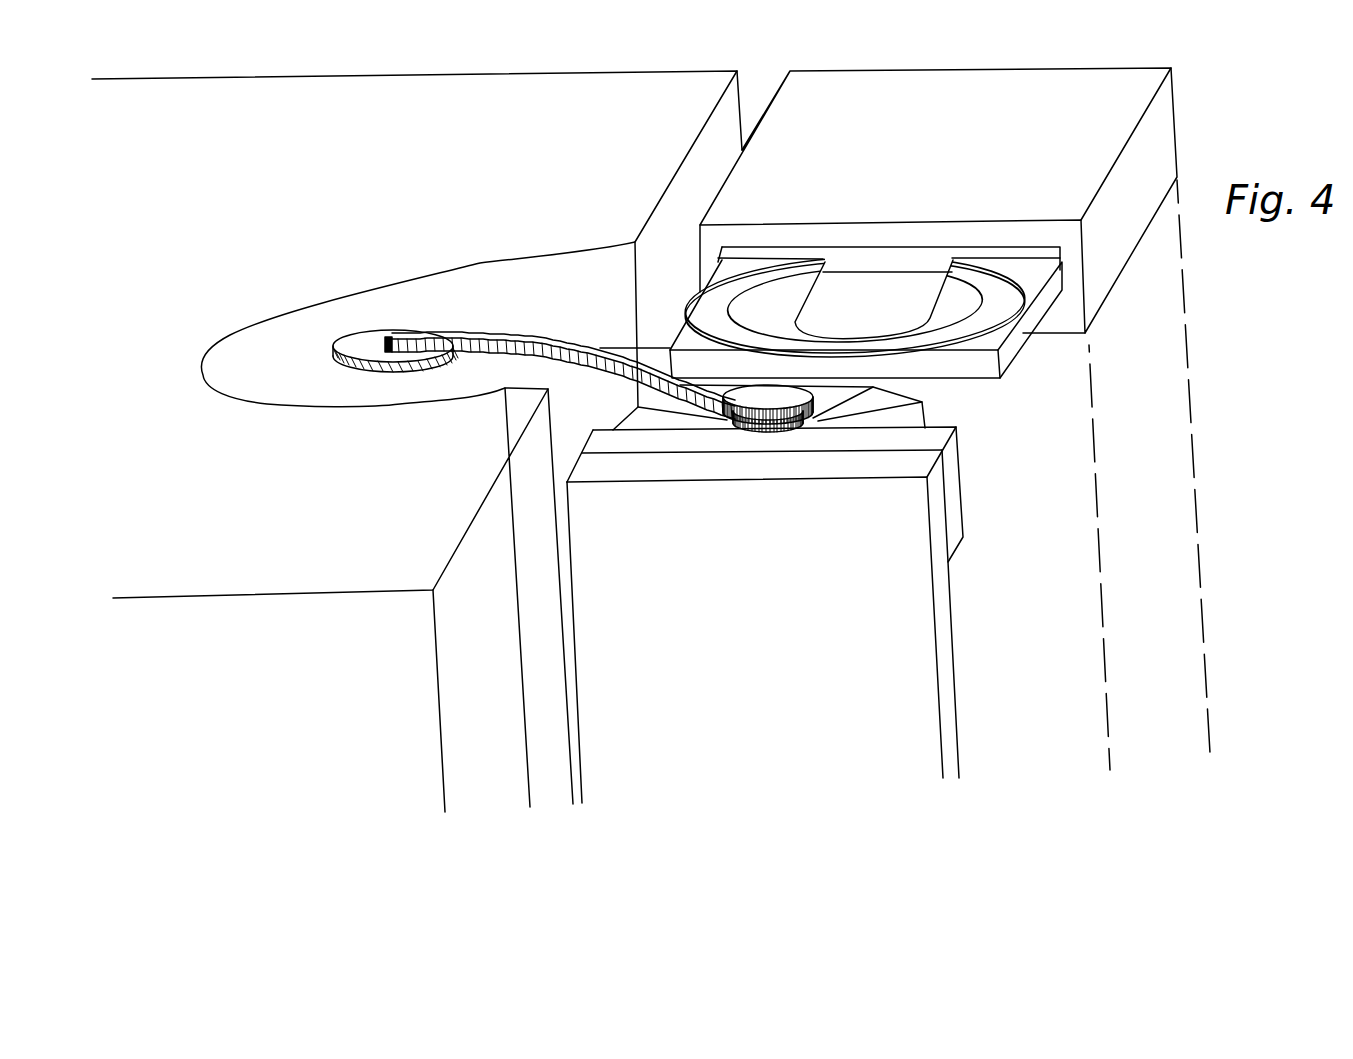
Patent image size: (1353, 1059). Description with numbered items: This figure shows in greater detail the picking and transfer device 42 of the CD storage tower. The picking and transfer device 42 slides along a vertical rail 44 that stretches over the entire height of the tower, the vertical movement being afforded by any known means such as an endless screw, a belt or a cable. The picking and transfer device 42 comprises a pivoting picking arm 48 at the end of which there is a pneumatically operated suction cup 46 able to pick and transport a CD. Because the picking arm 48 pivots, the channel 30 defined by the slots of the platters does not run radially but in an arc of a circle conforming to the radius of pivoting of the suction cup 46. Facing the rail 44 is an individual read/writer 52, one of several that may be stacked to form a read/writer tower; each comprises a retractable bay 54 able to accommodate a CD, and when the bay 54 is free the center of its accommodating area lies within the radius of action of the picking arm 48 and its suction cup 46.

The channel 30 is at (483, 268).
The picking and transfer device 42 is at (938, 405).
The vertical rail 44 is at (945, 577).
The suction cup 46 is at (363, 337).
The picking arm 48 is at (528, 335).
The individual read/writer 52 is at (1067, 78).
The retractable bay 54 is at (1017, 340).